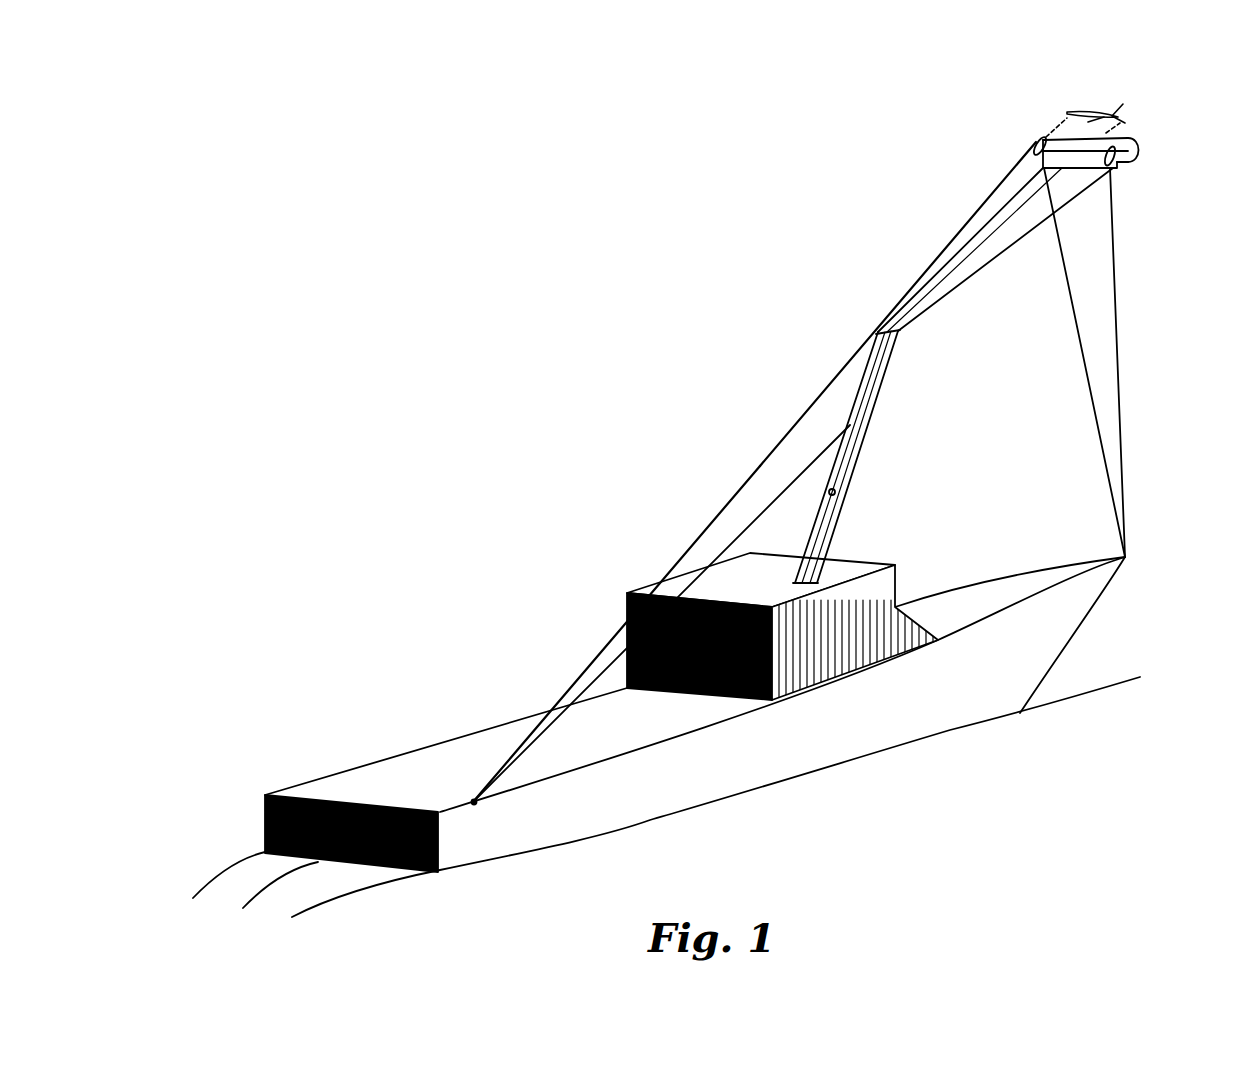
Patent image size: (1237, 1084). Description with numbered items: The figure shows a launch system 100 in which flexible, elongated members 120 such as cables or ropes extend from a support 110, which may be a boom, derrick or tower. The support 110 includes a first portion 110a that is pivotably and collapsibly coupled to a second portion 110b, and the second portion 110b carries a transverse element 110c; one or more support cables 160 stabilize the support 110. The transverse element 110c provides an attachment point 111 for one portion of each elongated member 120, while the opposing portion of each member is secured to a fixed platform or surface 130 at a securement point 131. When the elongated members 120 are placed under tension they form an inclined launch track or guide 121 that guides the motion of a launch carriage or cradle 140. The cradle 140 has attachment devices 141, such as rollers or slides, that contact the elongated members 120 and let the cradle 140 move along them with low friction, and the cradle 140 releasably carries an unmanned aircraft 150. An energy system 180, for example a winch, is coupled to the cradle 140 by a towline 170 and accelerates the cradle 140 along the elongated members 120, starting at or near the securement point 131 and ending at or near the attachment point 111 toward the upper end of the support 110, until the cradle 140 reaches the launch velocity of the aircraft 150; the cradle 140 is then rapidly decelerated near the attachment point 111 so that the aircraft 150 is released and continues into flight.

The launch system 100 is at (500, 488).
The support 110 is at (1001, 361).
The first portion 110a is at (855, 473).
The second portion 110b is at (958, 266).
The transverse element 110c is at (1100, 170).
The attachment point 111 is at (1146, 150).
The flexible, elongated members 120 is at (768, 479).
The launch track or guide 121 is at (849, 351).
The fixed platform or surface 130 is at (401, 765).
The securement point 131 is at (488, 792).
The launch carriage or cradle 140 is at (1040, 147).
The attachment devices 141 is at (1042, 137).
The unmanned aircraft 150 is at (1110, 103).
The support cables 160 is at (1117, 306).
The towline 170 is at (822, 490).
The energy system 180 is at (857, 542).